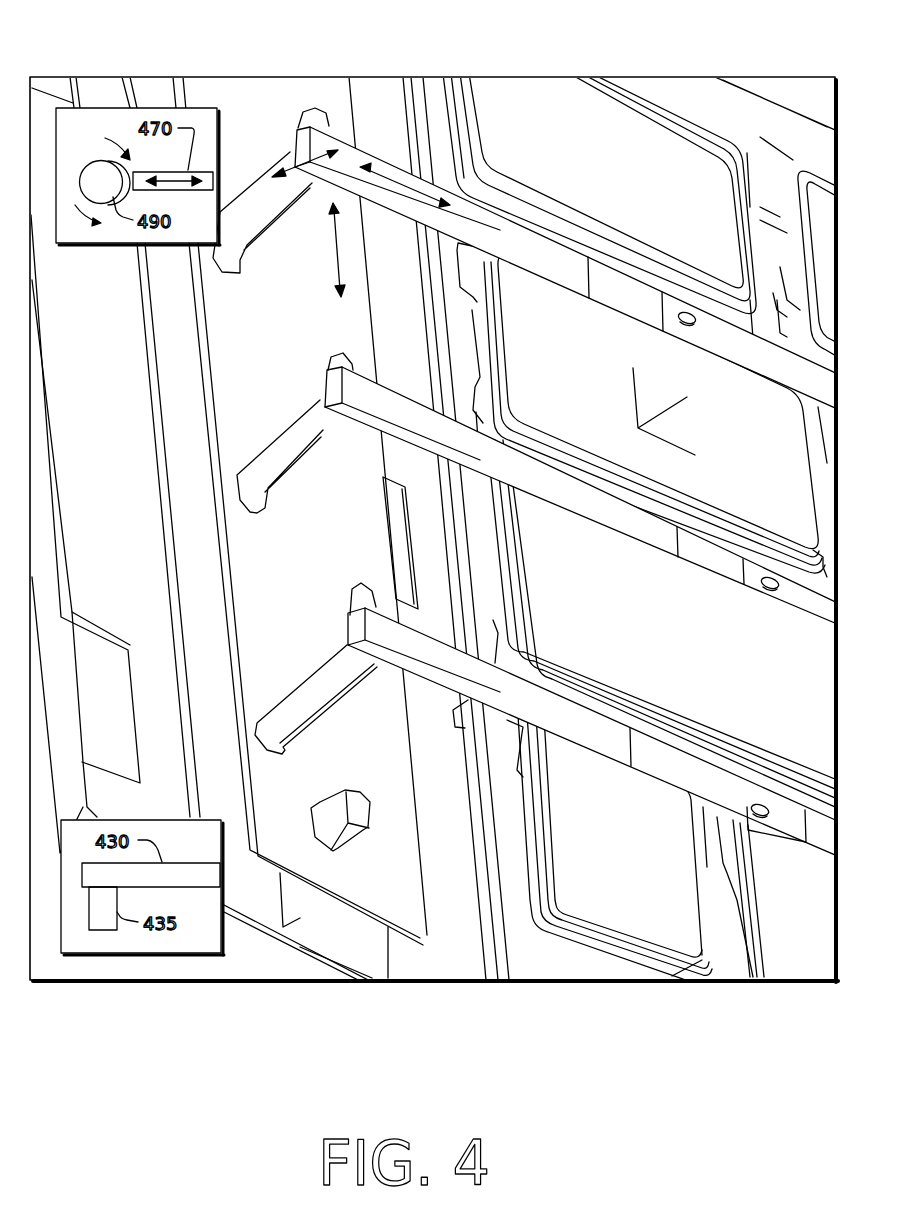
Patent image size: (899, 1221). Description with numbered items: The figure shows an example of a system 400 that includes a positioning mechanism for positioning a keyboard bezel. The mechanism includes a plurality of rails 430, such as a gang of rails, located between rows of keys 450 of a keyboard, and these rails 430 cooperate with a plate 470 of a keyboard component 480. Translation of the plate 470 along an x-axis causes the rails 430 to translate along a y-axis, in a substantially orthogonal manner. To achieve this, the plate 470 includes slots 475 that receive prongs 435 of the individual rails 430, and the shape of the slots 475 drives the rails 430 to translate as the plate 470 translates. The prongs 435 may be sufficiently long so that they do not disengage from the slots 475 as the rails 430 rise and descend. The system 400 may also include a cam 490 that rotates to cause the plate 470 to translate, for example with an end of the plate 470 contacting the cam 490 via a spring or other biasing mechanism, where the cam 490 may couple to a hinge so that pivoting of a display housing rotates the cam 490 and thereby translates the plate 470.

The system 400 is at (610, 61).
The keyboard component 480 is at (201, 529).
The plate 470 is at (178, 128).
The cam 490 is at (113, 197).
The rows of keys 450 is at (619, 492).
The rails 430 is at (330, 385).
The prongs 435 is at (330, 362).
The slots 475 is at (296, 468).